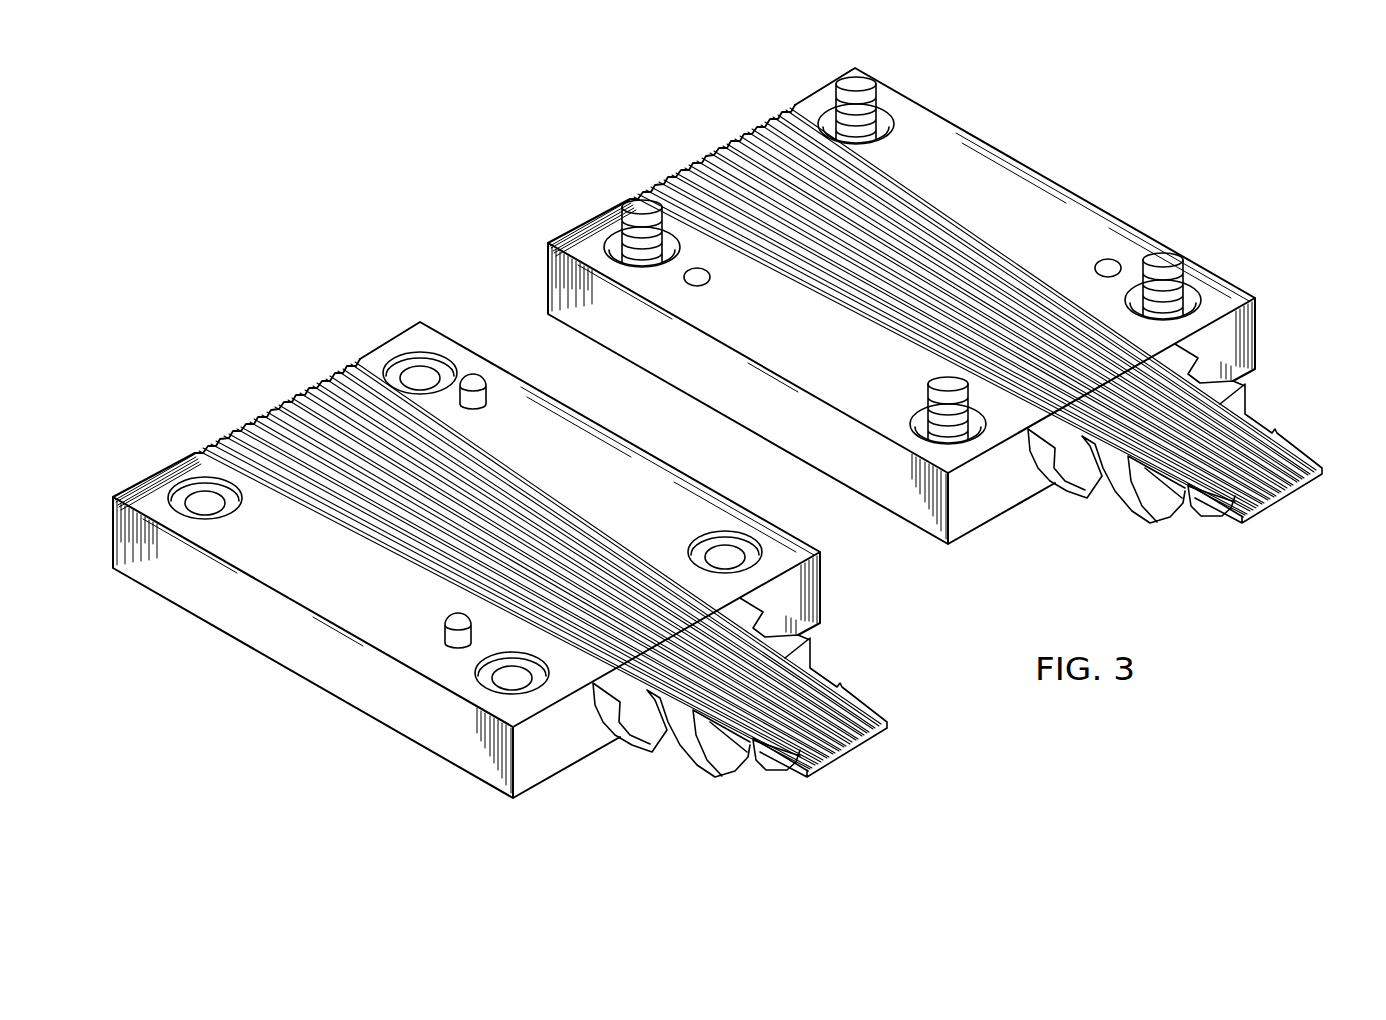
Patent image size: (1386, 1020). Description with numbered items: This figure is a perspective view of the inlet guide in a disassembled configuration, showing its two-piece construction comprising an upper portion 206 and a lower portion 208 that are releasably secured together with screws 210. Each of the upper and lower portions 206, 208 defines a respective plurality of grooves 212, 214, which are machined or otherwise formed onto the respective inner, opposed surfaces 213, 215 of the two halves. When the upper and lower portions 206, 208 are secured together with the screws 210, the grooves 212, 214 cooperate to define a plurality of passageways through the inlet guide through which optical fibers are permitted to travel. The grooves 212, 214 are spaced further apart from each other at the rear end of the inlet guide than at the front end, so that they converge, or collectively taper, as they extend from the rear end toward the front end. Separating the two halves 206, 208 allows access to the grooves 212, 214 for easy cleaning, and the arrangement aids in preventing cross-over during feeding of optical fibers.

The upper portion 206 is at (758, 423).
The lower portion 208 is at (320, 677).
The screws 210 is at (845, 84).
The grooves 212 is at (760, 135).
The inner surface 213 is at (1108, 223).
The grooves 214 is at (322, 382).
The inner surface 215 is at (152, 482).